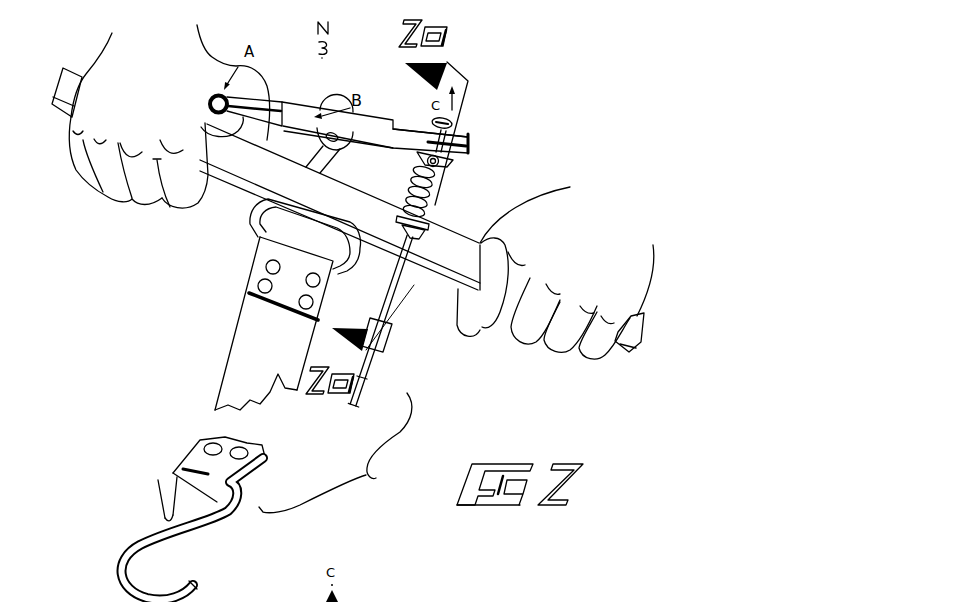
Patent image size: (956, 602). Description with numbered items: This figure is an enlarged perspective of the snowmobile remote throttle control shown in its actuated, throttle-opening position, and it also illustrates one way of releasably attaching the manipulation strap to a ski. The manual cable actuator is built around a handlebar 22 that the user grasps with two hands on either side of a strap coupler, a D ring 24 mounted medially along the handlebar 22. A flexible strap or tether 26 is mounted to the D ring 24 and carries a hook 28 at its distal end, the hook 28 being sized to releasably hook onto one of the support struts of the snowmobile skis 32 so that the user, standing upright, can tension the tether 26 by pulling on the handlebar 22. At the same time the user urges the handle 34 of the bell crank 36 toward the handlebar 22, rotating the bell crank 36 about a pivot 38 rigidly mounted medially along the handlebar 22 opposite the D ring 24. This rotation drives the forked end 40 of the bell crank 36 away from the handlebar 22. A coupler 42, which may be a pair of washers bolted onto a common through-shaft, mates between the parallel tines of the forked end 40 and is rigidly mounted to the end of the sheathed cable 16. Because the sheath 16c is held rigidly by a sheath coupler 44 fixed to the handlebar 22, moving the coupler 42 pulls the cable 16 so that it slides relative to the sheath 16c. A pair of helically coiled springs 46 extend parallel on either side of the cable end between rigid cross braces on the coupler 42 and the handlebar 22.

The sheathed cable 16 is at (361, 392).
The sheath 16c is at (383, 320).
The handlebar 22 is at (633, 348).
The D ring 24 is at (250, 232).
The tether 26 is at (240, 328).
The hook 28 is at (132, 541).
The snowmobile skis 32 is at (323, 40).
The handle 34 is at (219, 90).
The bell crank 36 is at (310, 100).
The pivot 38 is at (338, 140).
The forked end 40 is at (471, 130).
The coupler 42 is at (424, 359).
The sheath coupler 44 is at (446, 236).
The helically coiled springs 46 is at (418, 172).